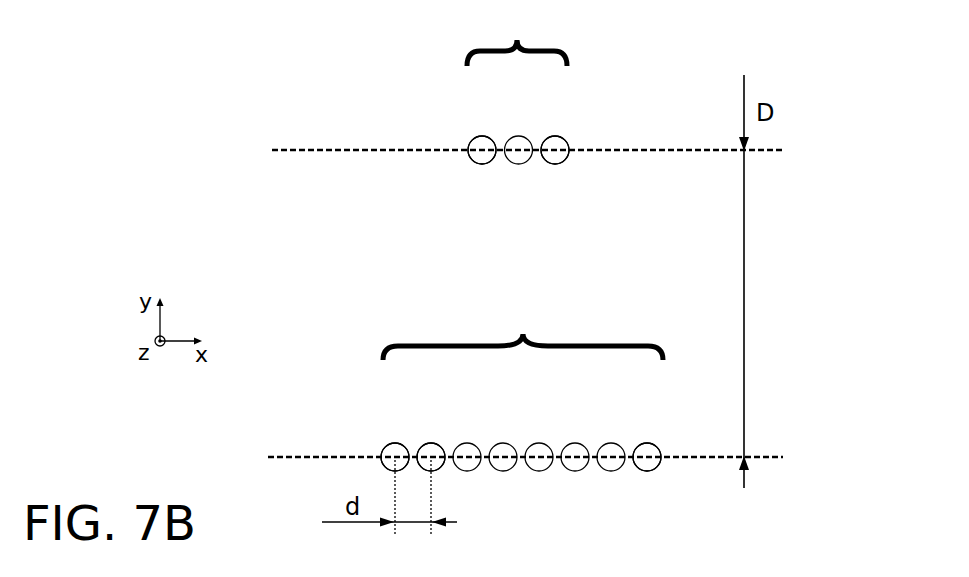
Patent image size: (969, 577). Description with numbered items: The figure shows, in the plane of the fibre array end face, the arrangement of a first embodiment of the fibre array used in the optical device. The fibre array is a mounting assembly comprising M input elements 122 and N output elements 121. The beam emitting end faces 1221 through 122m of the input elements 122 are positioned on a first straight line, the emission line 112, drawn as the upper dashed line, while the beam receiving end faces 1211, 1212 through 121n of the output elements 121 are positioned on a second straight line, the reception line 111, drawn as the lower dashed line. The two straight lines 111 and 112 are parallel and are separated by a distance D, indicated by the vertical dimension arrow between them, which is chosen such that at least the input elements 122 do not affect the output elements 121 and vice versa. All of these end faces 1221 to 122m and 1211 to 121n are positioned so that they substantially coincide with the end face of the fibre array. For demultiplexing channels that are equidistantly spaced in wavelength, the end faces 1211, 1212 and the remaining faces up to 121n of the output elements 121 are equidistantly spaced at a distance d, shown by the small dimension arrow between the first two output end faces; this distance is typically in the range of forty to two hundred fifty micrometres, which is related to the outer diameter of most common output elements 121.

The input elements 122 is at (518, 84).
The beam emitting end face of first input element 1221 is at (483, 143).
The beam emitting end face of m-th input element 122m is at (556, 143).
The output elements 121 is at (522, 385).
The beam receiving end face of first output element 1211 is at (395, 449).
The beam receiving end face of second output element 1212 is at (431, 449).
The beam receiving end face of n-th output element 121n is at (647, 449).
The emission line 112 is at (765, 152).
The reception line 111 is at (765, 456).